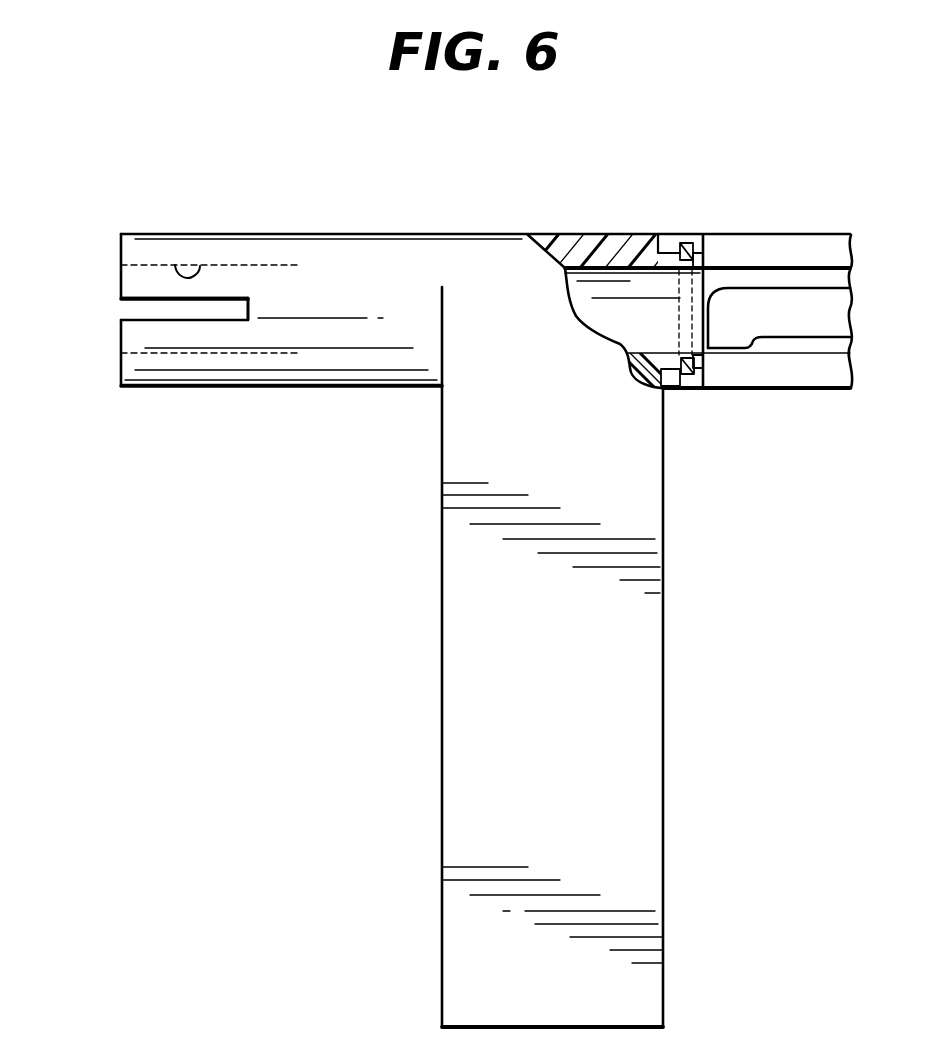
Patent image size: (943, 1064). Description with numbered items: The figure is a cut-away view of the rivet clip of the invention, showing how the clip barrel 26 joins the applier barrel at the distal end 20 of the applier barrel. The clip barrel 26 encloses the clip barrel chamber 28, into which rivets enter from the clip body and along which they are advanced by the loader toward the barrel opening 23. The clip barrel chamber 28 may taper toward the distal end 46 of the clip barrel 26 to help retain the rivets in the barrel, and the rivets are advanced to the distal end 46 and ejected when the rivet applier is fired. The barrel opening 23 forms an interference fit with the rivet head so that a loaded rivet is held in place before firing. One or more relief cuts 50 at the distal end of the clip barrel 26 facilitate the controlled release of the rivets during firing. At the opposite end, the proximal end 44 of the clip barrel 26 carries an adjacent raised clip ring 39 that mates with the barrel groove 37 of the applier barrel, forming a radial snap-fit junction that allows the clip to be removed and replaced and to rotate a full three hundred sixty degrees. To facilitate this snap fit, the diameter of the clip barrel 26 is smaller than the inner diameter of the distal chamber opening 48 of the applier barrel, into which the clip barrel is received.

The distal end of the applier barrel 20 is at (640, 233).
The barrel opening 23 is at (120, 278).
The clip barrel 26 is at (205, 265).
The clip barrel chamber 28 is at (270, 340).
The barrel groove 37 is at (688, 375).
The raised clip ring 39 is at (683, 243).
The proximal end of the clip barrel 44 is at (708, 255).
The distal end of the clip barrel 46 is at (137, 333).
The distal chamber opening 48 is at (670, 385).
The relief cuts 50 is at (135, 310).